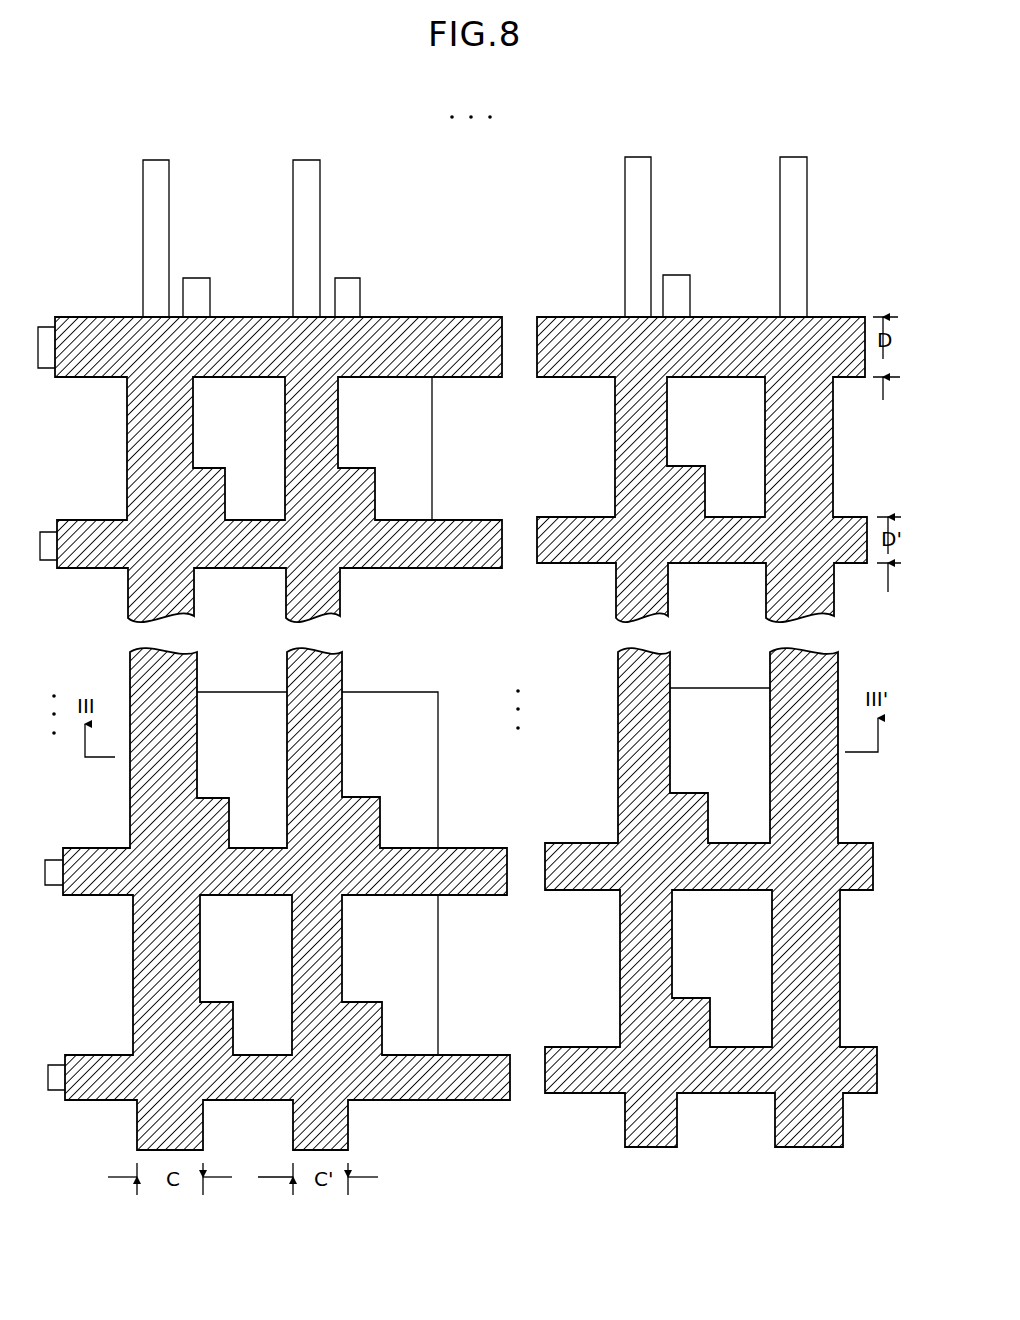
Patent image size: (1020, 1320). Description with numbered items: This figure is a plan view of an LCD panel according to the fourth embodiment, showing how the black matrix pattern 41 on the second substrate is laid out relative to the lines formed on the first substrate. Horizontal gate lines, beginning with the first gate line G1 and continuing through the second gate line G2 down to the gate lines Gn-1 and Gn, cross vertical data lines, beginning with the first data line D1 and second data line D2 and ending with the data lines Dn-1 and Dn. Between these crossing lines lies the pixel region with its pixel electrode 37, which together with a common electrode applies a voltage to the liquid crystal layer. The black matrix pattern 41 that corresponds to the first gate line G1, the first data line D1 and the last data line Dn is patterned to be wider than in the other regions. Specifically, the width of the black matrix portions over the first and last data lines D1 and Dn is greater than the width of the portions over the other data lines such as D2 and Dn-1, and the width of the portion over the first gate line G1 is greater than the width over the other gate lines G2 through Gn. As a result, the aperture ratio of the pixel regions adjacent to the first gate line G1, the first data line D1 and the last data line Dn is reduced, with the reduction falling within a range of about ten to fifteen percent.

The black matrix pattern 41 is at (421, 317).
The pixel electrode 37 is at (398, 692).
The first data line D1 is at (157, 161).
The second data line D2 is at (306, 161).
The (n-1)th data line Dn-1 is at (637, 158).
The last data line Dn is at (792, 158).
The first gate line G1 is at (68, 317).
The second gate line G2 is at (71, 520).
The (n-1)th gate line Gn-1 is at (77, 848).
The last gate line Gn is at (79, 1055).